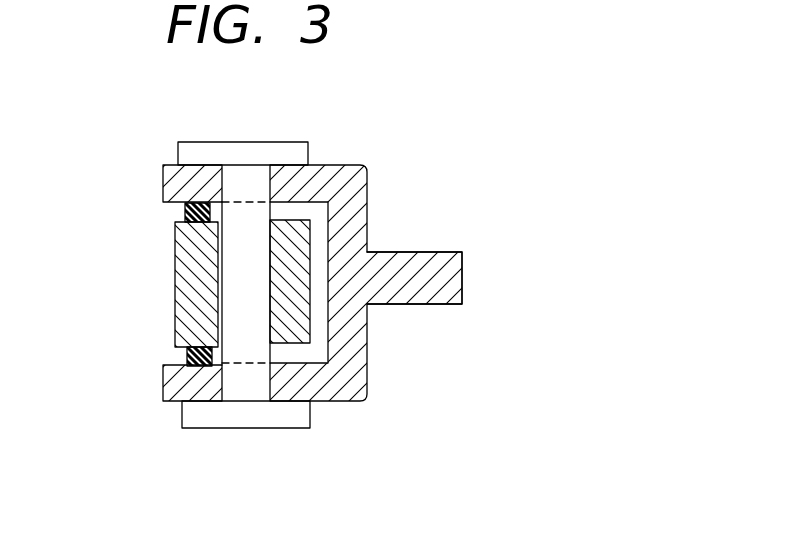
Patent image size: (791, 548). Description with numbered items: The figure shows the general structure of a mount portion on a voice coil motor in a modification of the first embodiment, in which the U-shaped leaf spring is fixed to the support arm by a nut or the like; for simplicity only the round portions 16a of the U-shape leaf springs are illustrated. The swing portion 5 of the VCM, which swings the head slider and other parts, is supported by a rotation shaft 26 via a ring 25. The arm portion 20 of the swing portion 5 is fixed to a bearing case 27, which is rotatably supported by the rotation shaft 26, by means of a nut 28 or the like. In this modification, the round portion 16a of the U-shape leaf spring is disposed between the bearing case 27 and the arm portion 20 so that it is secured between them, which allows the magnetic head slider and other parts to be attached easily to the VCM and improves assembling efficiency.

The swing portion 5 is at (402, 265).
The round portion 16a is at (185, 215).
The arm portion 20 is at (234, 182).
The ring 25 is at (164, 305).
The rotation shaft 26 is at (248, 212).
The bearing case 27 is at (190, 278).
The nut 28 is at (233, 413).